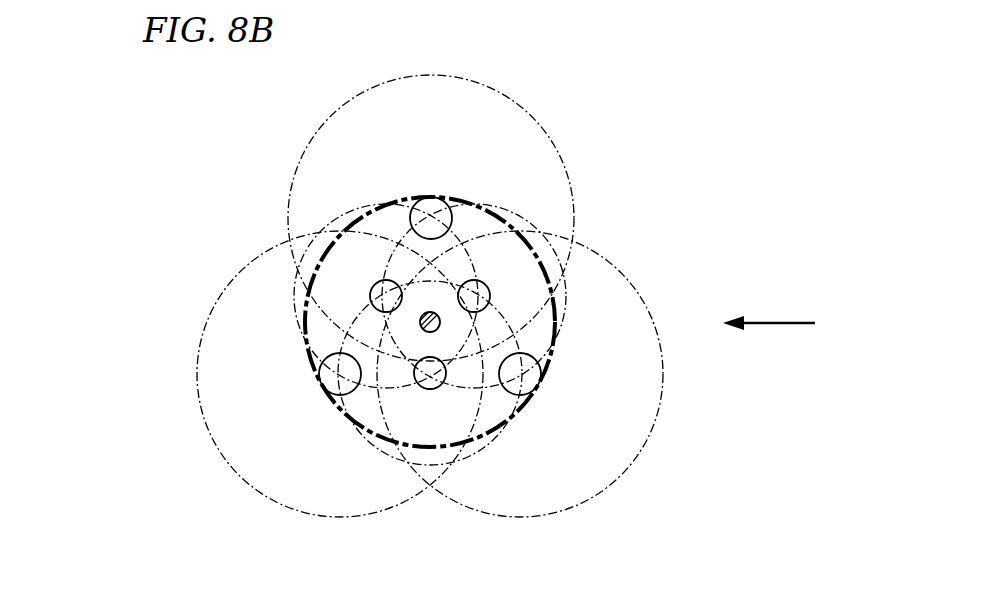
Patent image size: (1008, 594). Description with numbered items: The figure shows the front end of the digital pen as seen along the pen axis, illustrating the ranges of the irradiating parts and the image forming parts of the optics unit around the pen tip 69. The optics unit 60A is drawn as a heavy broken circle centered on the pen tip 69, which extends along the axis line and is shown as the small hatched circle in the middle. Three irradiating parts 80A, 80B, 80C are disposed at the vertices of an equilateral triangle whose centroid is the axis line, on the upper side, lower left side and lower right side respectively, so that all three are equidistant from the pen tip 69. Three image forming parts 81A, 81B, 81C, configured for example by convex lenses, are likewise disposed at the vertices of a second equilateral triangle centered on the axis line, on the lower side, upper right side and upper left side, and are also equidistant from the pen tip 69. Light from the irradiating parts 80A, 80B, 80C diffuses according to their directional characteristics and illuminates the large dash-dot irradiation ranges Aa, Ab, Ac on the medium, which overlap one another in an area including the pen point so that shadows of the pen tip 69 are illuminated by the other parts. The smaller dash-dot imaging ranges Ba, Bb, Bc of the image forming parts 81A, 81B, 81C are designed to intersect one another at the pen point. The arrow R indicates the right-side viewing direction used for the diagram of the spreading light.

The rotary body 60A is at (553, 352).
The pen tip 69 is at (420, 313).
The irradiating part 80A is at (433, 198).
The irradiating part 80B is at (324, 390).
The irradiating part 80C is at (541, 379).
The image forming part 81A is at (441, 385).
The image forming part 81B is at (489, 286).
The image forming part 81C is at (371, 291).
The irradiation range Aa is at (574, 200).
The irradiation range Ab is at (199, 343).
The irradiation range Ac is at (660, 343).
The imaging range Ba is at (472, 455).
The imaging range Bb is at (543, 227).
The imaging range Bc is at (330, 224).
The arrow R direction R is at (769, 313).